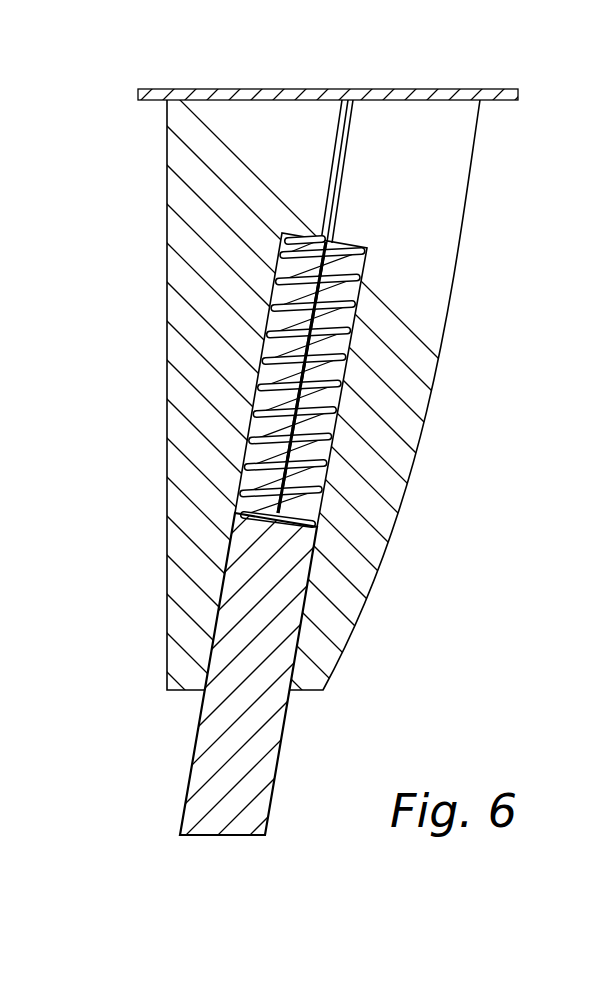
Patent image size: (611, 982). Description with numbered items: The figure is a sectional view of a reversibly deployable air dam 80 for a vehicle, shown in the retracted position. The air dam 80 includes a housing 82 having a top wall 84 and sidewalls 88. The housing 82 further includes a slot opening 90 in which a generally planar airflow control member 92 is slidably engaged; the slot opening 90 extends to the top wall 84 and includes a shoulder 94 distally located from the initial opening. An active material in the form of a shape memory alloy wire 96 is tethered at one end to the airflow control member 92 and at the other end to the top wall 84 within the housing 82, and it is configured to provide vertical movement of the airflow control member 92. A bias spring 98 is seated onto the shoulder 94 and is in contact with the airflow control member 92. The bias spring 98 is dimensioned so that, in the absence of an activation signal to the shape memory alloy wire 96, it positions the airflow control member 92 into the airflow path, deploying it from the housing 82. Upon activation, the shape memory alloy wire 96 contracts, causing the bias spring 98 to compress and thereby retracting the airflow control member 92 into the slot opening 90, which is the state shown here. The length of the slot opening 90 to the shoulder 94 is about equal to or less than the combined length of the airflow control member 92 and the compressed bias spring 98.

The air dam 80 is at (206, 70).
The housing 82 is at (152, 422).
The top wall 84 is at (413, 88).
The sidewalls 88 is at (167, 607).
The slot opening 90 is at (288, 685).
The airflow control member 92 is at (212, 783).
The shoulder 94 is at (303, 232).
The shape memory alloy wire 96 is at (343, 173).
The bias spring 98 is at (355, 407).